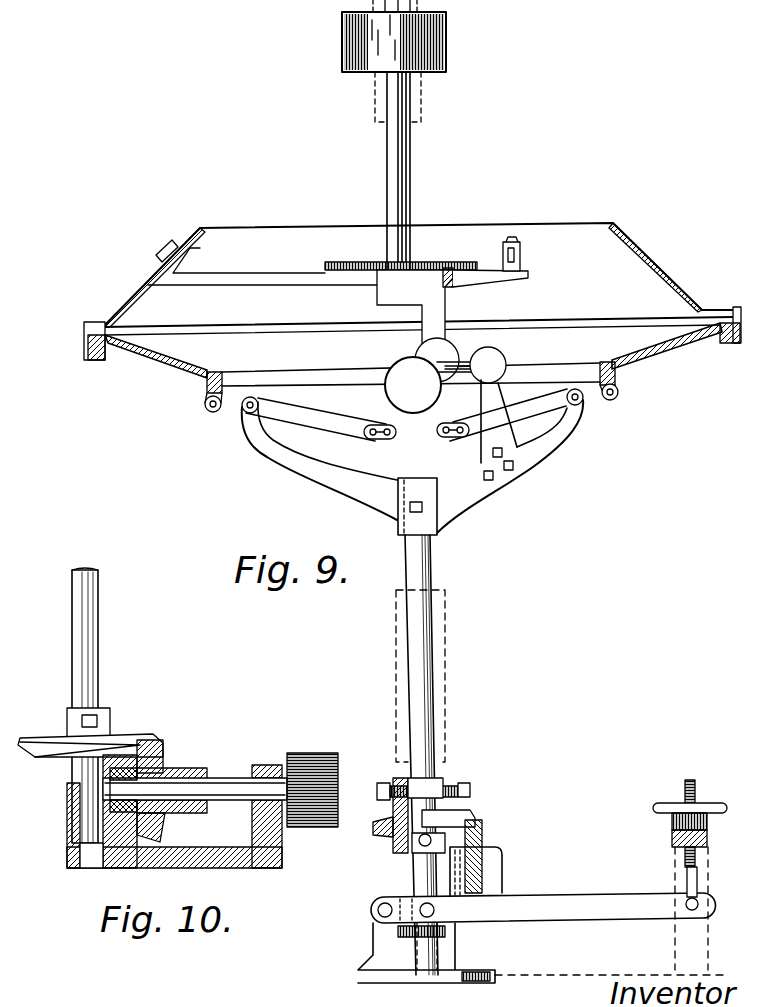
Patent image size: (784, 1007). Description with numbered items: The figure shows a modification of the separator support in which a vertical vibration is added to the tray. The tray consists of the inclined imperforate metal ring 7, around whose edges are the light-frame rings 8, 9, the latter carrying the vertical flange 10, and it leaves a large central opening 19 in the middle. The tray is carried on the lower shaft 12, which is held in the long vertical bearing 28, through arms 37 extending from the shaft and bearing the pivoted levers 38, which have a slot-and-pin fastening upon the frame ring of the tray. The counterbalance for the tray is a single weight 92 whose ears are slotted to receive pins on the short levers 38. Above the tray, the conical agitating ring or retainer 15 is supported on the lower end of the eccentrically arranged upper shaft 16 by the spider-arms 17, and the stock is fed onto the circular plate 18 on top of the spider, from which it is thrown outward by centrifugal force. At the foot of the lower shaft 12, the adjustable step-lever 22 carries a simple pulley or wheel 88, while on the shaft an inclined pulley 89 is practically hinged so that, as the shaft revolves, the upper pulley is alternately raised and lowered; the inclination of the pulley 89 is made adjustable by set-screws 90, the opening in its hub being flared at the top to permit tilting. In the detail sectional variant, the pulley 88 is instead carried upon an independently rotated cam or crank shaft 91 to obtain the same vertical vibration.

In FIG. 9, the inclined imperforate metal ring 7 is at (178, 362).
In FIG. 9, the light-frame ring 8 is at (617, 374).
In FIG. 9, the light-frame ring 9 is at (735, 343).
In FIG. 9, the vertical flange 10 is at (735, 320).
In FIG. 9, the lower shaft 12 is at (423, 646).
In FIG. 10, the lower shaft 12 is at (88, 667).
In FIG. 9, the agitating ring or retainer 15 is at (160, 276).
In FIG. 9, the upper shaft 16 is at (400, 178).
In FIG. 9, the spider-arms 17 is at (246, 281).
In FIG. 9, the circular plate 18 is at (424, 266).
In FIG. 9, the central opening 19 is at (288, 374).
In FIG. 9, the adjusting-lever 22 is at (573, 896).
In FIG. 9, the vertical bearing 28 is at (440, 694).
In FIG. 9, the arms 37 is at (283, 458).
In FIG. 9, the pivoted levers 38 is at (306, 414).
In FIG. 9, the pulley or wheel 88 is at (485, 840).
In FIG. 10, the pulley or wheel 88 is at (160, 740).
In FIG. 9, the inclined pulley 89 is at (474, 810).
In FIG. 9, the set-screws 90 is at (459, 786).
In FIG. 10, the cam or crank shaft 91 is at (165, 790).
In FIG. 9, the single weight 92 is at (445, 375).